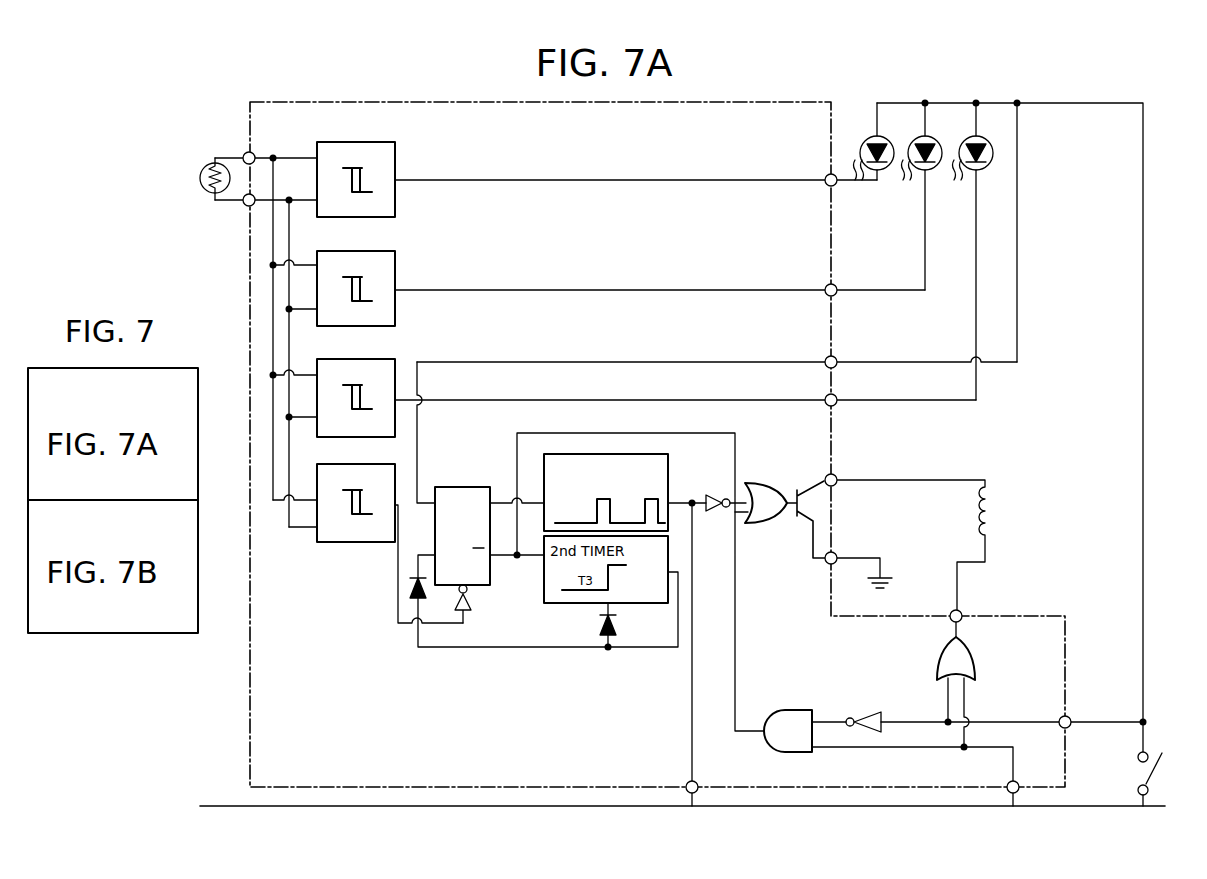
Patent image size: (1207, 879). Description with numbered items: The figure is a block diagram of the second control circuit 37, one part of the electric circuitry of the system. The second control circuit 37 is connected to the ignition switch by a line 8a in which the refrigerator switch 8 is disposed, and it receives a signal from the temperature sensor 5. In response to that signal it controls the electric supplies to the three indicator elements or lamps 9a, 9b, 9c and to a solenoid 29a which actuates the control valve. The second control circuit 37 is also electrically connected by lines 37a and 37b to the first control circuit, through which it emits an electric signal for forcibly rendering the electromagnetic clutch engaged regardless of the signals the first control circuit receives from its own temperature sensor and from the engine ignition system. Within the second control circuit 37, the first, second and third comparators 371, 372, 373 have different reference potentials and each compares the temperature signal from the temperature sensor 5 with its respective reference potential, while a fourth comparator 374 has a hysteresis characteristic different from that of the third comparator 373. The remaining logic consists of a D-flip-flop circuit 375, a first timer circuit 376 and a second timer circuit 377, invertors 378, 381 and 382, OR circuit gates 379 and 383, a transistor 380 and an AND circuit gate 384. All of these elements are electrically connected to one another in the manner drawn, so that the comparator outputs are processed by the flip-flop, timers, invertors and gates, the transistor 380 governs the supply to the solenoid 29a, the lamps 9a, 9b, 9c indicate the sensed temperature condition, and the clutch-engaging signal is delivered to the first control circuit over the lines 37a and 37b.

The temperature sensor 5 is at (205, 165).
The refrigerator switch 8 is at (1151, 772).
The line 8a is at (1140, 726).
The indicator lamp 9a is at (868, 140).
The indicator lamp 9b is at (916, 140).
The indicator lamp 9c is at (968, 140).
The solenoid 29a is at (997, 512).
The second control circuit 37 is at (249, 100).
The line 37a is at (697, 786).
The line 37b is at (1012, 794).
The first comparator 371 is at (373, 142).
The second comparator 372 is at (391, 251).
The third comparator 373 is at (395, 359).
The fourth comparator 374 is at (358, 543).
The D-flip-flop circuit 375 is at (465, 487).
The first timer circuit 376 is at (662, 456).
The second timer circuit 377 is at (648, 606).
The invertor 378 is at (728, 508).
The OR circuit gate 379 is at (777, 485).
The transistor 380 is at (815, 504).
The invertor 381 is at (470, 603).
The invertor 382 is at (868, 710).
The OR circuit gate 383 is at (978, 662).
The AND circuit gate 384 is at (786, 708).